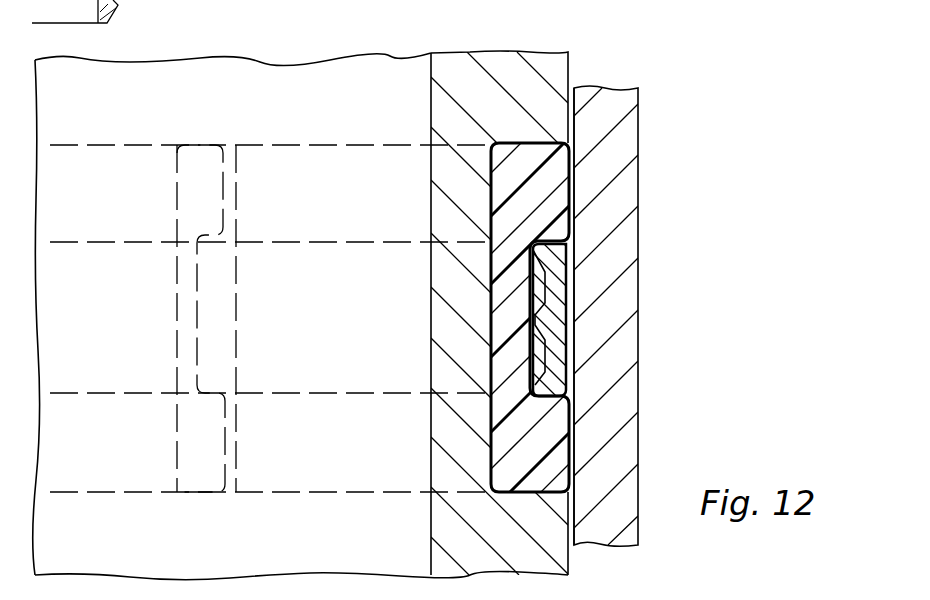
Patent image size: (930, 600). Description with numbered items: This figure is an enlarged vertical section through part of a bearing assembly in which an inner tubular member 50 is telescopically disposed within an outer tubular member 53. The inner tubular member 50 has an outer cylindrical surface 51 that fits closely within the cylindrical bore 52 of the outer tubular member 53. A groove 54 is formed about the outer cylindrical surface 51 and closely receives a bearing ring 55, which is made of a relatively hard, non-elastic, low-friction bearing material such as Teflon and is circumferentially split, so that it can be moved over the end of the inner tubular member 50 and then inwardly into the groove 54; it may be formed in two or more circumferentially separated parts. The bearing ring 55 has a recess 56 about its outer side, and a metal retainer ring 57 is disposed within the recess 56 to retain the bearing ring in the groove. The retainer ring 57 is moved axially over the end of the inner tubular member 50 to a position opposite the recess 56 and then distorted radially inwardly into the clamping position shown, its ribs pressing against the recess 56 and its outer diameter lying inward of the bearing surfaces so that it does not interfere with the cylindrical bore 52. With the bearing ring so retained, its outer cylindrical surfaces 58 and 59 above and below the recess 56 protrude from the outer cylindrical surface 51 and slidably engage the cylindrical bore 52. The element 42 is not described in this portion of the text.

The retainer element 42 is at (137, 0).
The inner tubular member 50 is at (497, 52).
The outer cylindrical surface 51 is at (568, 68).
The cylindrical bore 52 is at (572, 112).
The outer tubular member 53 is at (612, 308).
The groove 54 is at (491, 443).
The bearing ring 55 is at (580, 192).
The recess 56 is at (532, 348).
The retainer ring 57 is at (568, 270).
The upper outer cylindrical surface 58 is at (573, 167).
The lower outer cylindrical surface 59 is at (577, 452).